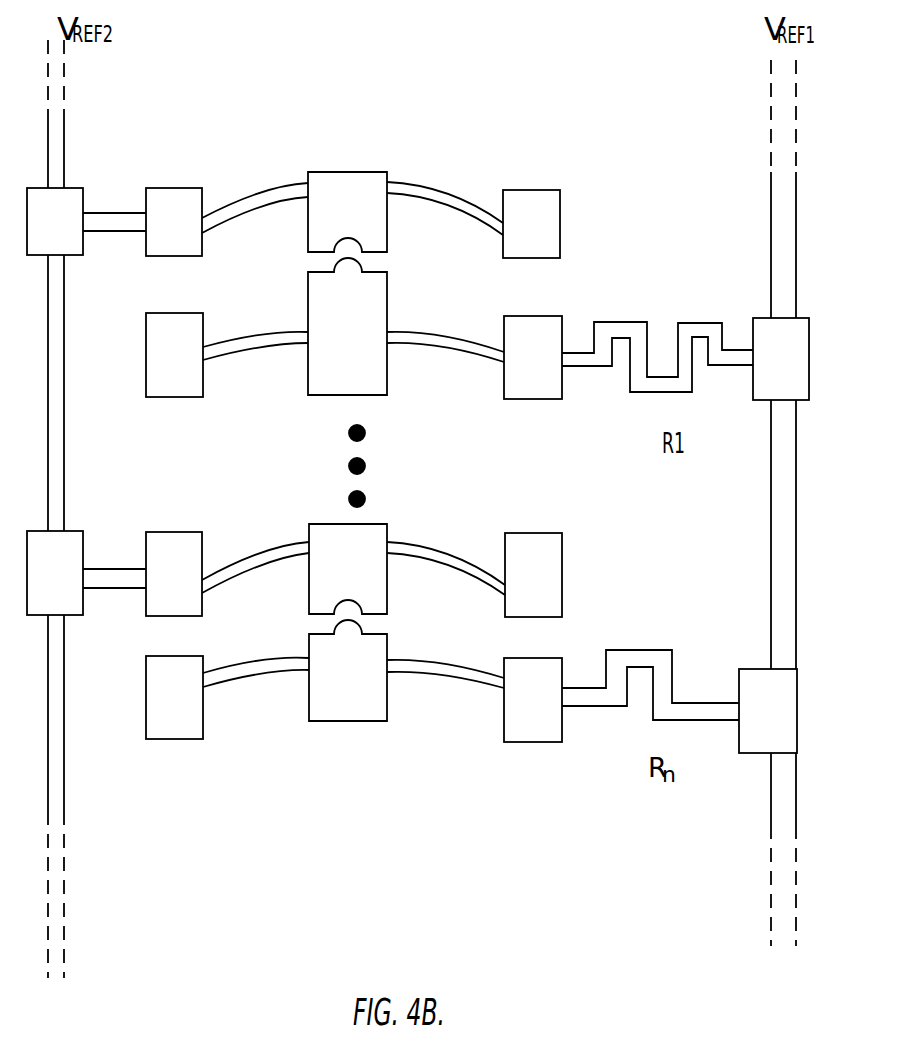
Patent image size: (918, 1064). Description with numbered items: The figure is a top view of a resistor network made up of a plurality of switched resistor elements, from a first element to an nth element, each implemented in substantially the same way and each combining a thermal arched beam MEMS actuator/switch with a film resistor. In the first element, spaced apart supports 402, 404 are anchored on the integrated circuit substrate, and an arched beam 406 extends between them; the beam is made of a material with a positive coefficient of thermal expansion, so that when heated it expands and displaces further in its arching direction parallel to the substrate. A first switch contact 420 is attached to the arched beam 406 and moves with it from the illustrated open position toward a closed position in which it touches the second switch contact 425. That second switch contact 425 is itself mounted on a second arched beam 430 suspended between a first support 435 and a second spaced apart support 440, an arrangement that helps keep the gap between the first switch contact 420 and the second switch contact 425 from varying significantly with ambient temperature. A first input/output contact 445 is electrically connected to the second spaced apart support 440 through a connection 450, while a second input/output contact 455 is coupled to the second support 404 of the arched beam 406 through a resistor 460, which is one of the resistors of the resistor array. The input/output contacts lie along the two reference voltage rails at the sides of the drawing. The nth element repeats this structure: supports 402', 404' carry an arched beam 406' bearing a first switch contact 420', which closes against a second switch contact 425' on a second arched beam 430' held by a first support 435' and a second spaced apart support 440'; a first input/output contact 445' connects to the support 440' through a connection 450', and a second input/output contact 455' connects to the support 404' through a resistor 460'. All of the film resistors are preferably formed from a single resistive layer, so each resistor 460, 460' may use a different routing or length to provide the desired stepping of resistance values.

The spaced apart support 402 is at (214, 385).
The spaced apart support 404 is at (552, 387).
The arched beam 406 is at (445, 375).
The first switch contact 420 is at (330, 354).
The second switch contact 425 is at (374, 170).
The arched beam 430 is at (462, 177).
The first support 435 is at (580, 196).
The second spaced apart support 440 is at (227, 193).
The first input/output contact 445 is at (90, 175).
The connection 450 is at (145, 186).
The second input/output contact 455 is at (803, 382).
The resistor 460 is at (657, 329).
The spaced apart support 402' is at (227, 719).
The spaced apart support 404' is at (558, 723).
The arched beam 406' is at (445, 703).
The first switch contact 420' is at (348, 699).
The second switch contact 425' is at (381, 549).
The arched beam 430' is at (446, 583).
The first support 435' is at (572, 564).
The second spaced apart support 440' is at (227, 557).
The first input/output contact 445' is at (92, 549).
The connection 450' is at (111, 616).
The second input/output contact 455' is at (803, 702).
The resistor 460' is at (650, 655).